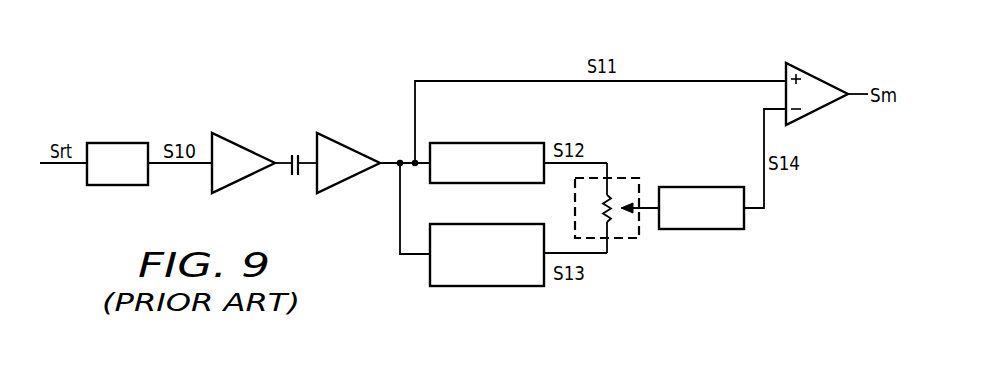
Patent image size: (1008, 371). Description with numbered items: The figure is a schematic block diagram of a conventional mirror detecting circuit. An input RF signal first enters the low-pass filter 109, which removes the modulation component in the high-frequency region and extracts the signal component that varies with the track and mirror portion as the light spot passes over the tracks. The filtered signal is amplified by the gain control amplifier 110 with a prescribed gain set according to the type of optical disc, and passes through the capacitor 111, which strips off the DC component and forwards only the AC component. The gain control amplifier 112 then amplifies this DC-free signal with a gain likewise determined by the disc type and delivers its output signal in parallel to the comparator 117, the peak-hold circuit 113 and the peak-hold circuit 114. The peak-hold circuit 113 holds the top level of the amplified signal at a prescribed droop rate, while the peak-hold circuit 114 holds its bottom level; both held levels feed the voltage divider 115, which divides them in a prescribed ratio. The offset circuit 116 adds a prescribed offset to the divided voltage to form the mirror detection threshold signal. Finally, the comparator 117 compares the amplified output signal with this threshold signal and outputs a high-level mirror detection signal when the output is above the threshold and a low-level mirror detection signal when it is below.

The low-pass filter 109 is at (118, 143).
The gain control amplifier 110 is at (237, 142).
The capacitor 111 is at (292, 178).
The gain control amplifier 112 is at (340, 142).
The peak-hold circuit 113 is at (488, 142).
The peak-hold circuit 114 is at (487, 287).
The voltage divider 115 is at (618, 241).
The offset circuit 116 is at (703, 230).
The comparator 117 is at (822, 72).